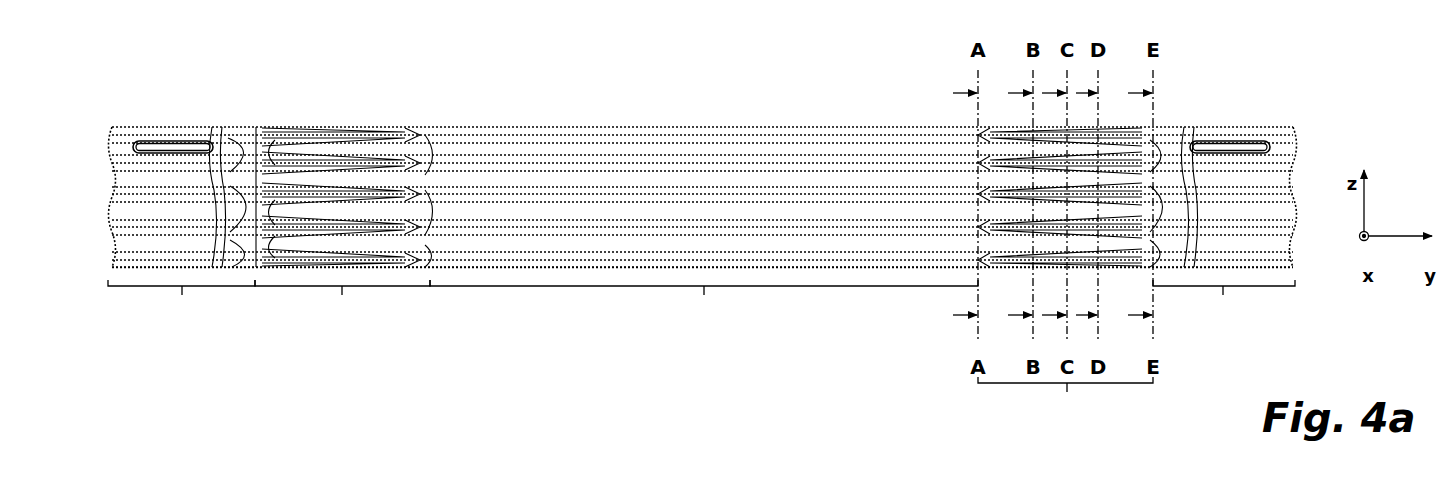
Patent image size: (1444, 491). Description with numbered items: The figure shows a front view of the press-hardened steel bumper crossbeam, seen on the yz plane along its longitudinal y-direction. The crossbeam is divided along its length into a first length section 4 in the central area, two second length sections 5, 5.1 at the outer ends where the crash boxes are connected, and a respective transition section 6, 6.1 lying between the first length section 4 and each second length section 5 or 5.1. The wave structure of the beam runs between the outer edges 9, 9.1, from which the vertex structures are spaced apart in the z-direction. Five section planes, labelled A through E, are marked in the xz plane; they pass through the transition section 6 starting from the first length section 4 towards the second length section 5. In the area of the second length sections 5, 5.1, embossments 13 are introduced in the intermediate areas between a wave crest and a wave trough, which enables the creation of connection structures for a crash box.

The outer edge 9 is at (1243, 124).
The outer edge 9.1 is at (1268, 271).
The embossment 13 is at (166, 136).
The first length section 4 is at (704, 309).
The second length section 5 is at (1224, 309).
The second length section 5.1 is at (181, 309).
The transition section 6 is at (1065, 410).
The transition section 6.1 is at (342, 309).